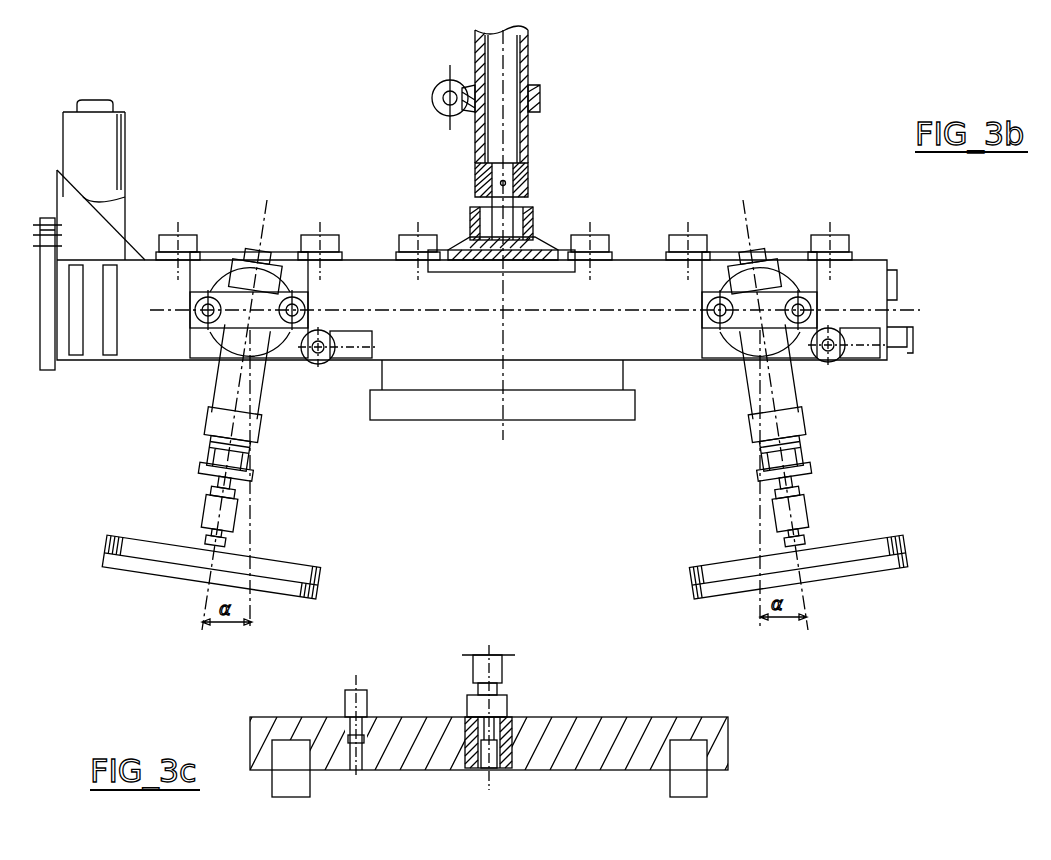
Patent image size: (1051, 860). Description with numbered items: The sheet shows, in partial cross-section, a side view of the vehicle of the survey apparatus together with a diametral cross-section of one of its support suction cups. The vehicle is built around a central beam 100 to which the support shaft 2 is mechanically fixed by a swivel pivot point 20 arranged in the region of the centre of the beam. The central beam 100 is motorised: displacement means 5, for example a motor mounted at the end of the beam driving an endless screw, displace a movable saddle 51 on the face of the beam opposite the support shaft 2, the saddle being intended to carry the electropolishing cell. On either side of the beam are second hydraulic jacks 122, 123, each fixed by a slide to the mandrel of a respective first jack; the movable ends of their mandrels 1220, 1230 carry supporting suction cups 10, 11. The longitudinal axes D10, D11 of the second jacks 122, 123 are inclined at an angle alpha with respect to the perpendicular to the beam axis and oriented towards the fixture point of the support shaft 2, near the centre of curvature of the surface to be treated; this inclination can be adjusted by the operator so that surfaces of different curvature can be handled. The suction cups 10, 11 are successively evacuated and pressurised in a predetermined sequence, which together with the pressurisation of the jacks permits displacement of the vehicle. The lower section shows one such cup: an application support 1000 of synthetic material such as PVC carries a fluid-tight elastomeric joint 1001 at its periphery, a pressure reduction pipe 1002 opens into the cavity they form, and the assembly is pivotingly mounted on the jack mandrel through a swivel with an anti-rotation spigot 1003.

In FIG. 3b, the support shaft 2 is at (530, 55).
In FIG. 3b, the displacement means 5 is at (68, 140).
In FIG. 3b, the supporting suction cup 10 is at (150, 557).
In FIG. 3b, the supporting suction cup 11 is at (720, 566).
In FIG. 3b, the swivel pivot point 20 is at (535, 210).
In FIG. 3b, the movable saddle 51 is at (418, 420).
In FIG. 3b, the central beam 100 is at (148, 345).
In FIG. 3b, the second hydraulic jack 122 is at (213, 388).
In FIG. 3b, the second hydraulic jack 123 is at (785, 378).
In FIG. 3b, the mandrel 1220 is at (208, 483).
In FIG. 3b, the mandrel 1230 is at (798, 483).
In FIG. 3b, the longitudinal axis of second jack D10 is at (262, 243).
In FIG. 3b, the longitudinal axis of second jack D11 is at (750, 243).
In FIG. 3c, the application support 1000 is at (600, 722).
In FIG. 3c, the fluid-tight joint 1001 is at (700, 776).
In FIG. 3c, the pressure reduction pipe 1002 is at (345, 700).
In FIG. 3c, the swivel with anti-rotation spigot 1003 is at (505, 703).